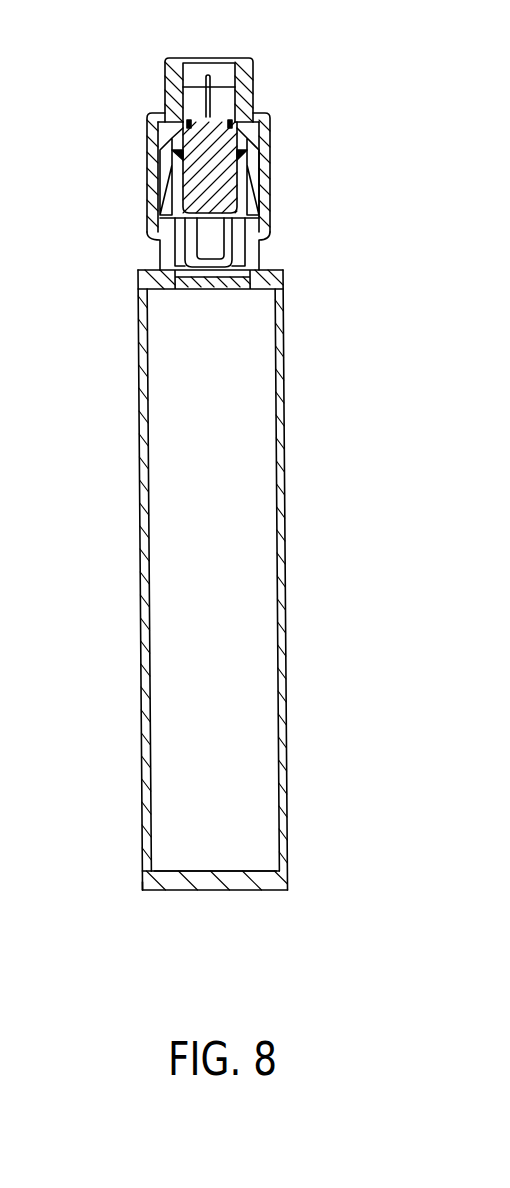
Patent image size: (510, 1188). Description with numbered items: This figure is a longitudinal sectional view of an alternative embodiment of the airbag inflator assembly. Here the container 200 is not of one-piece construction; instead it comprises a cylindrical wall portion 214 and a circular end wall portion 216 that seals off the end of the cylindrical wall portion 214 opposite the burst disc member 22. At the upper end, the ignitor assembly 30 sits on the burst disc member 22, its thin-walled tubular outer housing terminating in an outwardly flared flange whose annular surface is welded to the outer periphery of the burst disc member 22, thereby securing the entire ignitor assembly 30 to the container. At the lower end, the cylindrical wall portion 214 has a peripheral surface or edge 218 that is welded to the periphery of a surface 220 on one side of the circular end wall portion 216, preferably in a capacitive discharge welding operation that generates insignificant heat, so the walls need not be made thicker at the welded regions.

The ignitor assembly 30 is at (146, 108).
The burst disc member 22 is at (194, 290).
The container 200 is at (215, 611).
The cylindrical wall portion 214 is at (284, 658).
The circular end wall portion 216 is at (176, 890).
The peripheral surface or edge 218 is at (139, 871).
The surface 220 is at (182, 870).